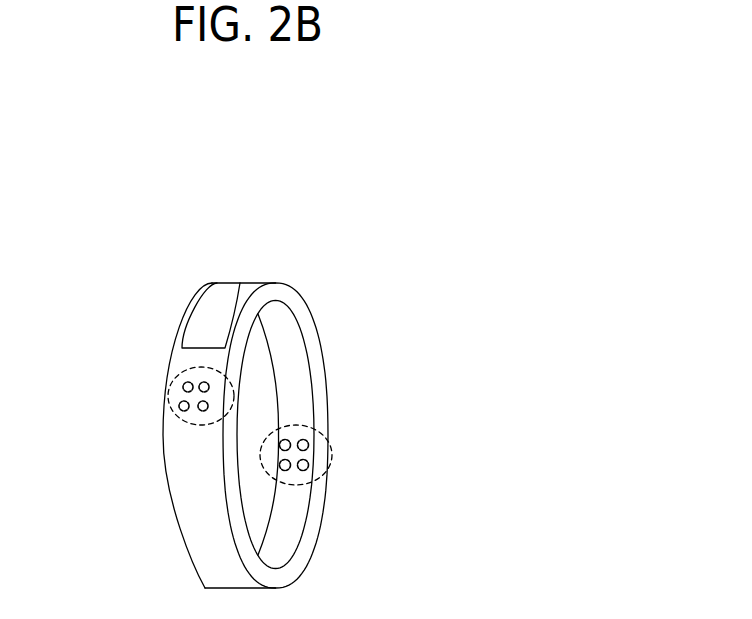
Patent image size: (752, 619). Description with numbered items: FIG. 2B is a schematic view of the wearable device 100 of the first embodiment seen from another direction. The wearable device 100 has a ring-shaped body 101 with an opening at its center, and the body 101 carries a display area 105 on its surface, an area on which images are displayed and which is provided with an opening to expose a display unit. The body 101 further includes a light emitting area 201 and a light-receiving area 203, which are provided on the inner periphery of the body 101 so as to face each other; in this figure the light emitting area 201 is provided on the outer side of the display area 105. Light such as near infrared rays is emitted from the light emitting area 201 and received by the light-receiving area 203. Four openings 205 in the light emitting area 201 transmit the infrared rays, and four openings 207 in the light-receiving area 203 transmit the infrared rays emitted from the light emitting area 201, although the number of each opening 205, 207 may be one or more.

The wearable device 100 is at (103, 232).
The body 101 is at (314, 319).
The display area 105 is at (240, 282).
The light emitting area 201 is at (326, 428).
The light-receiving area 203 is at (187, 427).
The opening 205 is at (327, 452).
The opening 207 is at (168, 396).